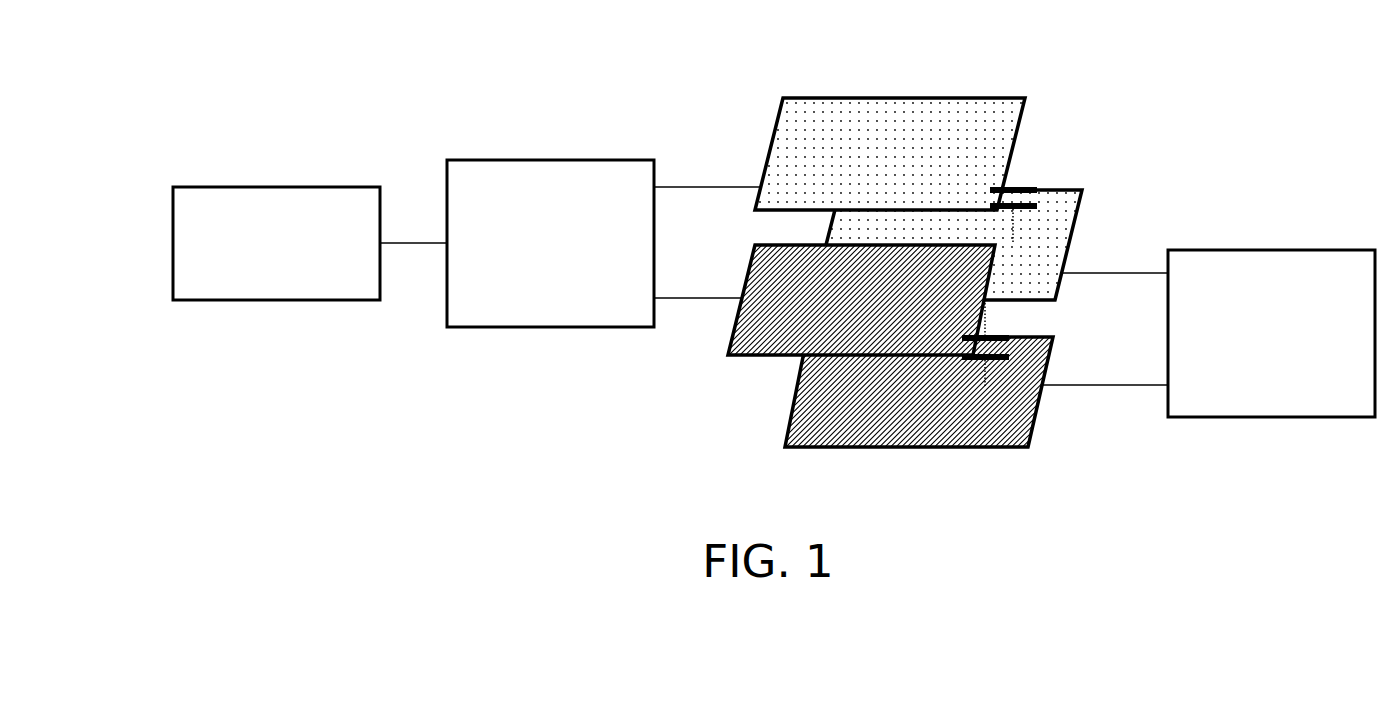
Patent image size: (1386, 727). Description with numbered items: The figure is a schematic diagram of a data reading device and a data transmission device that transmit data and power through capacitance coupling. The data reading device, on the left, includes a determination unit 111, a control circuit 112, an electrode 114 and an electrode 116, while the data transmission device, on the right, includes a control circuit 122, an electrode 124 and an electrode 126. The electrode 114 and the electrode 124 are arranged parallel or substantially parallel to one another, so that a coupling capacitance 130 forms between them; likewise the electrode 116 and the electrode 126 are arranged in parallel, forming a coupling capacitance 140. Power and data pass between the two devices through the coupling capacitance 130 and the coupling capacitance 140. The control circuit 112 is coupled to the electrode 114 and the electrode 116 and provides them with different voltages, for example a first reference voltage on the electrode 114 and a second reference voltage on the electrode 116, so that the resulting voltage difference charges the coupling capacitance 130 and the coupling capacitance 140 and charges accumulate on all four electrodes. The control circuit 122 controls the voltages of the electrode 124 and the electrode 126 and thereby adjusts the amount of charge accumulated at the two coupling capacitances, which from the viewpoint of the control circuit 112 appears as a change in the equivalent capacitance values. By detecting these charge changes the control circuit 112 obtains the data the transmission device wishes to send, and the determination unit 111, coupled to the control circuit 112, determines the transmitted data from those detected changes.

The determination unit 111 is at (284, 185).
The control circuit 112 is at (545, 158).
The electrode 114 is at (888, 110).
The electrode 116 is at (760, 346).
The control circuit 122 is at (1320, 248).
The electrode 124 is at (1063, 225).
The electrode 126 is at (935, 432).
The coupling capacitance 130 is at (1042, 175).
The coupling capacitance 140 is at (1012, 327).